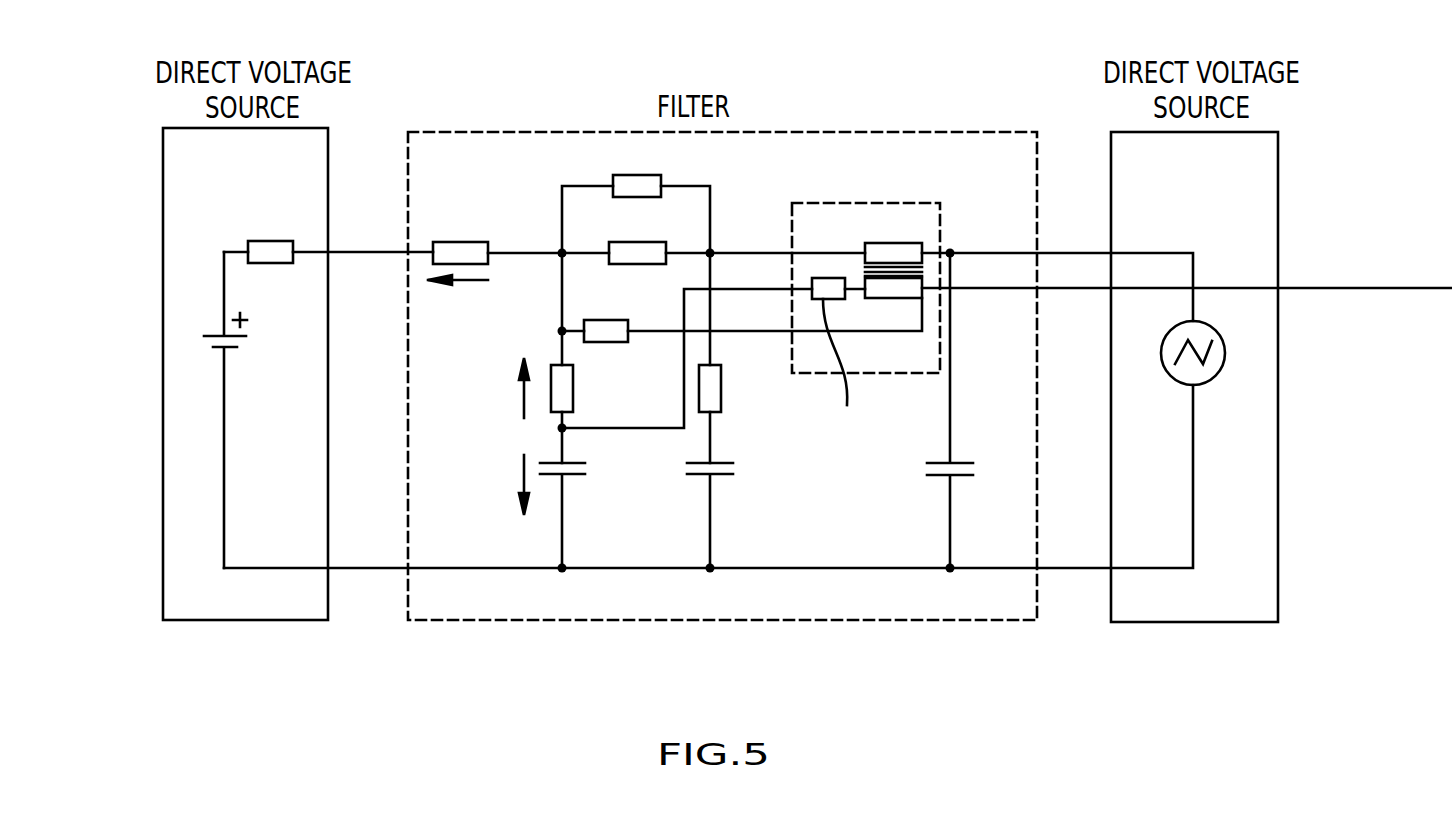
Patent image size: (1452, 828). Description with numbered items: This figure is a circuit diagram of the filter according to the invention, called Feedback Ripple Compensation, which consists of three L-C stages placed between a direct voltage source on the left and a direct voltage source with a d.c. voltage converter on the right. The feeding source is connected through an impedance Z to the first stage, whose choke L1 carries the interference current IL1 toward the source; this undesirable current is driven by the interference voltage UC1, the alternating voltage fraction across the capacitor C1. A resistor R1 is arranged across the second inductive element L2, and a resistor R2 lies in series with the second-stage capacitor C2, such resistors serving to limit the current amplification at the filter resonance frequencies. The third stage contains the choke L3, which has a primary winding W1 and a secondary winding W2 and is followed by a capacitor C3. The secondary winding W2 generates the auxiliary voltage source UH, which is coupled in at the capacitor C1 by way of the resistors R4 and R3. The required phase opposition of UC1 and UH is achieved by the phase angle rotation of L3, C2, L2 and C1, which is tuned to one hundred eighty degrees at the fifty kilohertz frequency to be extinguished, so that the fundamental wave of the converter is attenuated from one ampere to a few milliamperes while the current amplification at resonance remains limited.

The source impedance Z is at (328, 231).
The choke L1 is at (512, 232).
The interference current IL1 is at (458, 299).
The first resistor 33 Ohm R1 is at (642, 195).
The inductive element L2 is at (725, 232).
The resistor R4 is at (742, 309).
The resistor R3 is at (681, 376).
The auxiliary voltage source UH is at (503, 388).
The interference voltage UC1 is at (494, 485).
The capacitor C1 is at (580, 515).
The second resistor 0.35 Ohm R2 is at (740, 358).
The capacitor C2 is at (733, 515).
The choke L3 is at (1117, 338).
The first transformer winding W1 is at (1029, 263).
The secondary winding W2 is at (1148, 306).
The third capacitor 15 μF C3 is at (973, 410).